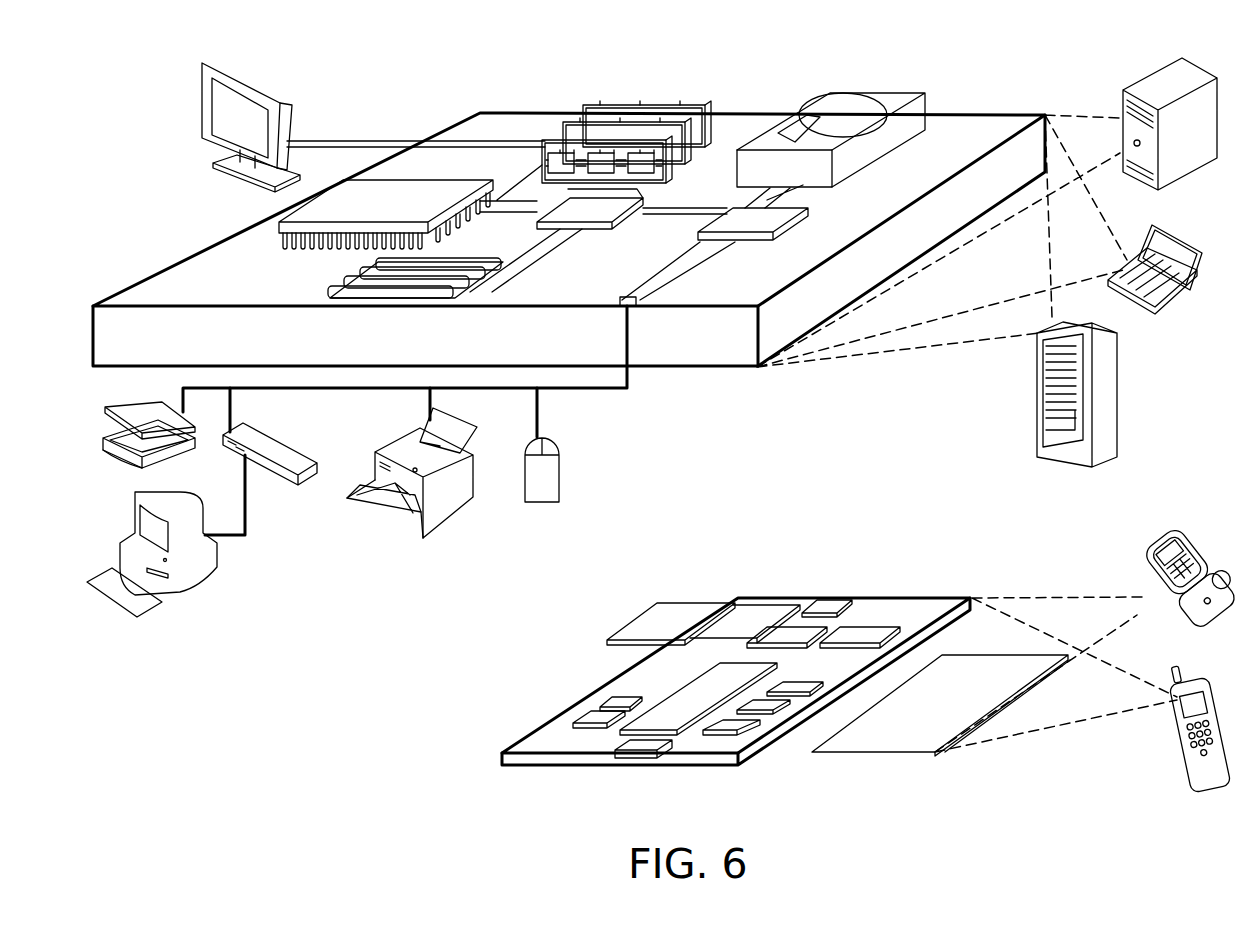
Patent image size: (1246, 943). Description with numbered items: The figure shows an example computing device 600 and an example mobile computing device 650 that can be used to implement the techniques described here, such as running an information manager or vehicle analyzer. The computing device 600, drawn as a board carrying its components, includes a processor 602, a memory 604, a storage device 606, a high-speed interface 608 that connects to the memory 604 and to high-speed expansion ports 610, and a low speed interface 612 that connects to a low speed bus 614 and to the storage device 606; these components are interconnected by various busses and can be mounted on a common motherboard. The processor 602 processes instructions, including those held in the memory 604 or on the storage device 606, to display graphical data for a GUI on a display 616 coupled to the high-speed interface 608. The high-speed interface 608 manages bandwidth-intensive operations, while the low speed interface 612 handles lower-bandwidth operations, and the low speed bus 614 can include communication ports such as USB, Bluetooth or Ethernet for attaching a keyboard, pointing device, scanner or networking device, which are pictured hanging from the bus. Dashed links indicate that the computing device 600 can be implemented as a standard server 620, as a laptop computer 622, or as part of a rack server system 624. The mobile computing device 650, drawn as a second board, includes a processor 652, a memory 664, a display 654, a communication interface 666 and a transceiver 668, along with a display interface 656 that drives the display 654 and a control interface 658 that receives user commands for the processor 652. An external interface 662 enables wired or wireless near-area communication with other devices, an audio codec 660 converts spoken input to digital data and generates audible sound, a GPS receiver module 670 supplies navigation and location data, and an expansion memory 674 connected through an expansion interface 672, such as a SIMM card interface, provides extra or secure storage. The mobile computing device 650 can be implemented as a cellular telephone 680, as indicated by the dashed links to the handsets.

The computing device 600 is at (403, 85).
The processor 602 is at (277, 231).
The memory 604 is at (583, 139).
The storage device 606 is at (800, 115).
The high-speed interface 608 is at (568, 212).
The high-speed expansion ports 610 is at (348, 271).
The low speed interface 612 is at (790, 215).
The low speed bus 614 is at (637, 306).
The display 616 is at (205, 78).
The standard server 620 is at (1122, 97).
The laptop computer 622 is at (1146, 230).
The rack server system 624 is at (1037, 418).
The mobile computing device 650 is at (716, 578).
The processor 652 is at (668, 740).
The display 654 is at (938, 756).
The display interface 656 is at (752, 740).
The control interface 658 is at (786, 718).
The audio codec 660 is at (800, 700).
The external interface 662 is at (640, 757).
The memory 664 is at (590, 718).
The communication interface 666 is at (785, 635).
The transceiver 668 is at (862, 630).
The GPS receiver module 670 is at (826, 605).
The expansion interface 672 is at (705, 607).
The expansion memory 674 is at (640, 607).
The cellular telephone 680 is at (1195, 540).